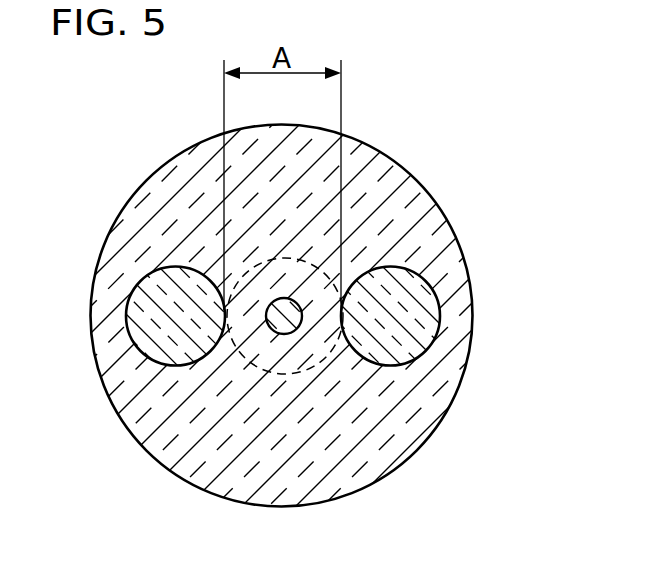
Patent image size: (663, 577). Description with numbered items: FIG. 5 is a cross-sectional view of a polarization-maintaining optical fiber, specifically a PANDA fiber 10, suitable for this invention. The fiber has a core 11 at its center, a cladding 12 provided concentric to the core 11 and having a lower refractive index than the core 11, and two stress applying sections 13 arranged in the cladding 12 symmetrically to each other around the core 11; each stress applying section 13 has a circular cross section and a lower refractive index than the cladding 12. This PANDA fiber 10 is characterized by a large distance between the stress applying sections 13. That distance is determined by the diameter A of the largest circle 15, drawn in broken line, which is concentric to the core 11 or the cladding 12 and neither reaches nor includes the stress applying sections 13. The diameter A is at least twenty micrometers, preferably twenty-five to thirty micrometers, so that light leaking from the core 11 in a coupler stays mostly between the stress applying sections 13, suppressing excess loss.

The PANDA fiber 10 is at (429, 193).
The core 11 is at (283, 335).
The cladding 12 is at (403, 413).
The stress applying sections 13 is at (145, 331).
The largest circle 15 is at (326, 357).